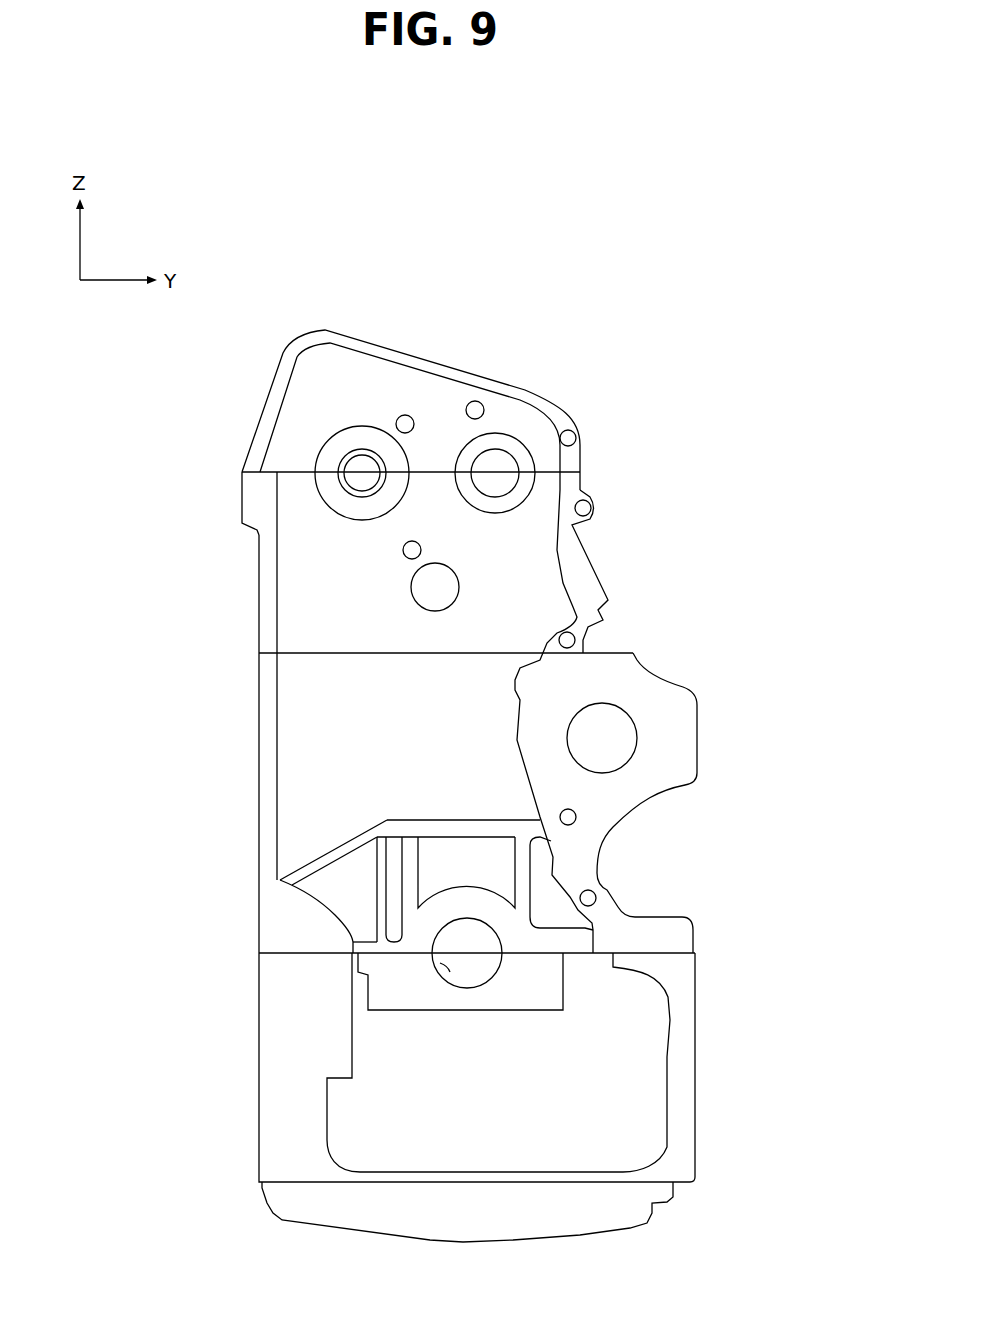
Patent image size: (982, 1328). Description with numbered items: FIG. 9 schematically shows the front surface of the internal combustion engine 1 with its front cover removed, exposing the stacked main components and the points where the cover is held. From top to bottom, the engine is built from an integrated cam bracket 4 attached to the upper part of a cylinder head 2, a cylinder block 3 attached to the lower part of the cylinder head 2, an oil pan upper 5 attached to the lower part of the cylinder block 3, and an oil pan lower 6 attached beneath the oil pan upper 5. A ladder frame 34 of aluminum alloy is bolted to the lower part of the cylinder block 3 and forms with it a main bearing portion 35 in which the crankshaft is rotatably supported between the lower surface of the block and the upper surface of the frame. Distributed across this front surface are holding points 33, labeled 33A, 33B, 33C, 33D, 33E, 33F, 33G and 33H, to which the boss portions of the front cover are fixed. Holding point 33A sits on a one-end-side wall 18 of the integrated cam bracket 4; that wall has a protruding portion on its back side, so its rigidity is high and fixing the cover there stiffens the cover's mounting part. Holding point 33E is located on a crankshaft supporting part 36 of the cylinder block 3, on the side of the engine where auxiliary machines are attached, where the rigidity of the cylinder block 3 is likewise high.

The internal combustion engine 1 is at (210, 409).
The cylinder head 2 is at (250, 512).
The cylinder block 3 is at (275, 797).
The integrated cam bracket 4 is at (572, 457).
The oil pan upper 5 is at (280, 1085).
The oil pan lower 6 is at (283, 1208).
The one-end-side wall 18 is at (291, 357).
The holding points 33 is at (465, 583).
The holding point 33A is at (576, 434).
The holding point 33B is at (591, 508).
The holding point 33C is at (576, 637).
The holding point 33D is at (577, 817).
The holding point 33E is at (597, 898).
The holding point 33F is at (475, 400).
The holding point 33G is at (405, 414).
The holding point 33H is at (403, 551).
The ladder frame 34 is at (540, 987).
The main bearing portion 35 is at (443, 968).
The crankshaft supporting part 36 is at (338, 901).